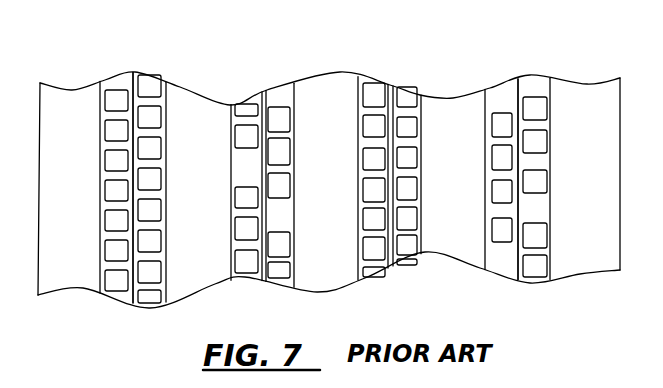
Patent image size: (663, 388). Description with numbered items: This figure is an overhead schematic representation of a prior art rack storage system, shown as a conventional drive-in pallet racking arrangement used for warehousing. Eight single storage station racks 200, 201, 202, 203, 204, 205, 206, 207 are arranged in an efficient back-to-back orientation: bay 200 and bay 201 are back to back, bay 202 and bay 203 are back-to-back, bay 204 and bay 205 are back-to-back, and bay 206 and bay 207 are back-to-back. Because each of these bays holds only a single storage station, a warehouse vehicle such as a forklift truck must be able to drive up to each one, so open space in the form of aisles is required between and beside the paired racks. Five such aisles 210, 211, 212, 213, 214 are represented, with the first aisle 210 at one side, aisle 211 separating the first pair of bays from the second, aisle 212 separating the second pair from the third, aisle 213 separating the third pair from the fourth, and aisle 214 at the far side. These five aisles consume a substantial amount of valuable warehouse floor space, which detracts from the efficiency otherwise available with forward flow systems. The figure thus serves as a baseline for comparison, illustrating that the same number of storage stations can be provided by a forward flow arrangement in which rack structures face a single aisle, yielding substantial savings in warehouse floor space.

The single storage station rack 200 is at (117, 80).
The single storage station rack 201 is at (145, 72).
The single storage station rack 202 is at (250, 102).
The single storage station rack 203 is at (278, 100).
The single storage station rack 204 is at (373, 80).
The single storage station rack 205 is at (408, 87).
The single storage station rack 206 is at (500, 82).
The single storage station rack 207 is at (535, 75).
The aisle 210 is at (63, 279).
The aisle 211 is at (190, 272).
The aisle 212 is at (332, 275).
The aisle 213 is at (452, 242).
The aisle 214 is at (582, 255).